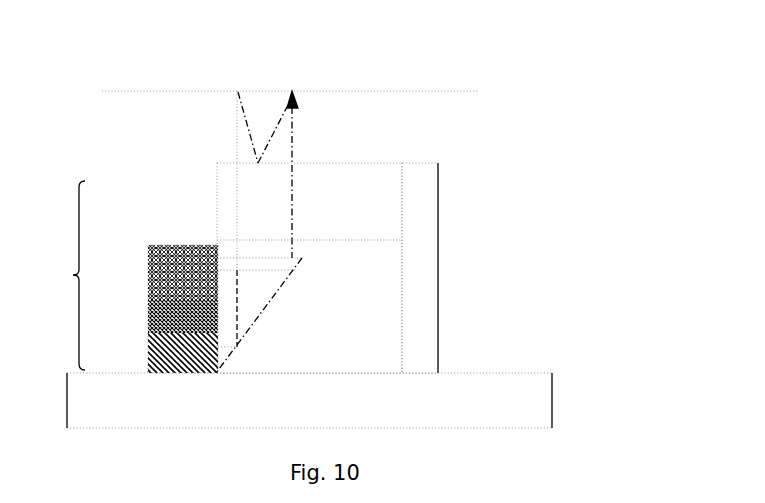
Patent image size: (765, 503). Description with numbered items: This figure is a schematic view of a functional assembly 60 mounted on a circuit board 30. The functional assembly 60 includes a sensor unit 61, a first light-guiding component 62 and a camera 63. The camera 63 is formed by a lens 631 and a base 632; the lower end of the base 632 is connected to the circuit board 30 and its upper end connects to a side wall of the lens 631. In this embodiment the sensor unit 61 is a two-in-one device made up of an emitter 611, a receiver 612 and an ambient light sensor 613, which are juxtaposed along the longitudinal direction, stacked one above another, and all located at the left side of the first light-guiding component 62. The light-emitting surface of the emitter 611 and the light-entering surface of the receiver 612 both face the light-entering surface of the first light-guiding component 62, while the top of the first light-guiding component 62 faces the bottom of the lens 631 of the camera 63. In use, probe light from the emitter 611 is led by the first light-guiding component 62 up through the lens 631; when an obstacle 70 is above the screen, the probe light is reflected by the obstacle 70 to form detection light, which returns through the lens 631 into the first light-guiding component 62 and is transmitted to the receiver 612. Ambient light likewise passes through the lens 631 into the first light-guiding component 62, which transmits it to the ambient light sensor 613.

The obstacle 70 is at (453, 91).
The camera 63 is at (330, 180).
The lens 631 is at (373, 180).
The base 632 is at (430, 237).
The first light-guiding component 62 is at (268, 293).
The functional assembly 60 is at (62, 275).
The sensor unit 61 is at (154, 296).
The emitter 611 is at (148, 257).
The ambient light sensor 613 is at (148, 324).
The receiver 612 is at (149, 368).
The circuit board 30 is at (535, 413).